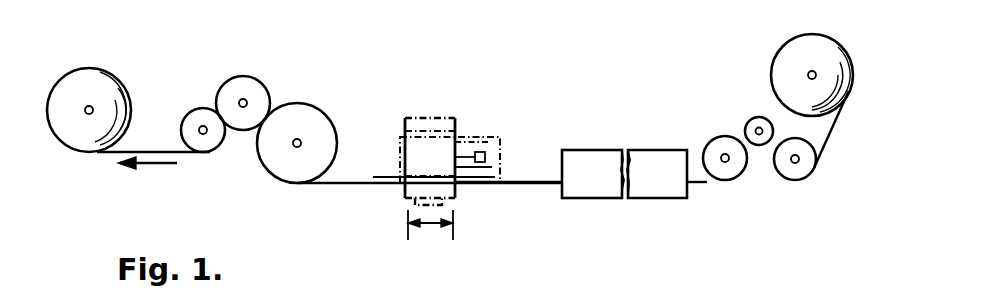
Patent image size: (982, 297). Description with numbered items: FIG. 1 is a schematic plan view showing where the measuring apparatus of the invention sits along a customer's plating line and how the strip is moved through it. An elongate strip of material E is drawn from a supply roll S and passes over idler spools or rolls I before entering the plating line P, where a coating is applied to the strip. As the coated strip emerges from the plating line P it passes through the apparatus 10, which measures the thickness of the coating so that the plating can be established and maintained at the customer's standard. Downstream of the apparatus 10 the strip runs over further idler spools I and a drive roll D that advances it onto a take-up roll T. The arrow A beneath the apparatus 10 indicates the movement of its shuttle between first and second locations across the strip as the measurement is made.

The take-up roll T is at (88, 68).
The idler spools or rolls I is at (199, 108).
The drive roll D is at (246, 76).
The supply roll S is at (780, 55).
The elongate strip of material E is at (522, 184).
The plating line P is at (623, 203).
The apparatus 10 is at (473, 123).
The arrow A is at (430, 228).